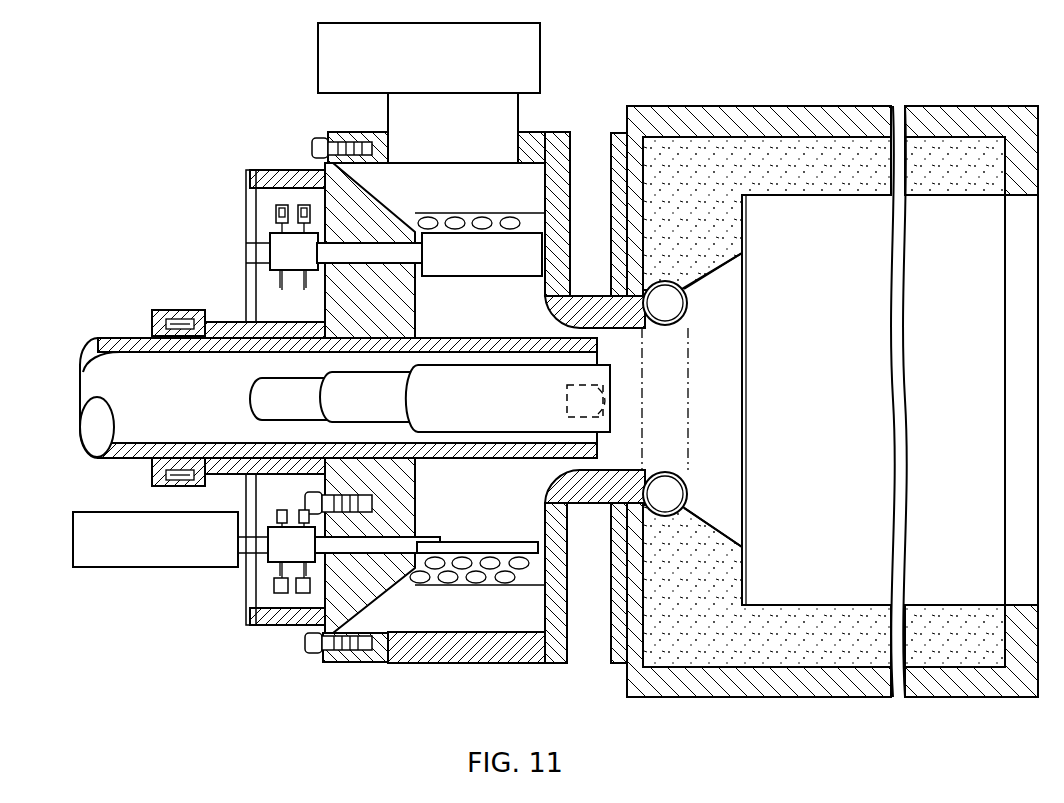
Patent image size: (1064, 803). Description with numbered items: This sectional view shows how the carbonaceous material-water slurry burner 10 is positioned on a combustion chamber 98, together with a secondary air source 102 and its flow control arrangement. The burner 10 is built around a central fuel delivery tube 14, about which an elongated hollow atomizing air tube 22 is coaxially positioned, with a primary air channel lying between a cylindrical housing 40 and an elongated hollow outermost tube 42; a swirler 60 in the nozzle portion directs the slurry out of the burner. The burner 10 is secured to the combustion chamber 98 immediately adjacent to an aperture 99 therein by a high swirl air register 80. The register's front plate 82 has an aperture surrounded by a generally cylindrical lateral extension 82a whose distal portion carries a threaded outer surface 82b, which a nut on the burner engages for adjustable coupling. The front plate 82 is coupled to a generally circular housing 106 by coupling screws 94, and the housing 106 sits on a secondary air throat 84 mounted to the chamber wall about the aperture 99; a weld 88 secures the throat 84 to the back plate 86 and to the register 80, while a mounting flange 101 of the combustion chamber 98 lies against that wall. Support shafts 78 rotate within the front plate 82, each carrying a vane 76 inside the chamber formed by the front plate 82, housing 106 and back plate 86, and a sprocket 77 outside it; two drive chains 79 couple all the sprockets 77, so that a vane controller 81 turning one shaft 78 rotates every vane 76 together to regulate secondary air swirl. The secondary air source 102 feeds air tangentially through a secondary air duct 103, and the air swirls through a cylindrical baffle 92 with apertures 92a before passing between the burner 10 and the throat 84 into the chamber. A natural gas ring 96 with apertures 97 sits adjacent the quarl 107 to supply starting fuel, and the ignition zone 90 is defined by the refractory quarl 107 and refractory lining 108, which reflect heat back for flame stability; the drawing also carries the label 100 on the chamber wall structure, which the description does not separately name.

The carbonaceous material-water slurry burner 10 is at (112, 339).
The fuel delivery tube 14 is at (294, 414).
The atomizing air tube 22 is at (366, 414).
The cylindrical housing 40 is at (464, 414).
The outermost tube 42 is at (83, 370).
The swirler 60 is at (566, 402).
The vane 76 is at (493, 266).
The sprocket 77 is at (306, 266).
The support shaft 78 is at (405, 254).
The drive chains 79 is at (275, 208).
The high swirl air register 80 is at (298, 642).
The vane controller 81 is at (205, 538).
The front plate 82 is at (368, 590).
The lateral extension 82a is at (238, 478).
The threaded outer surface 82b is at (190, 311).
The secondary air throat 84 is at (591, 497).
The back plate 86 is at (562, 587).
The weld 88 is at (595, 298).
The ignition zone 90 is at (831, 398).
The cylindrical baffle 92 is at (440, 217).
The apertures 92a is at (510, 217).
The coupling screws 94 is at (305, 656).
The natural gas ring 96 is at (679, 396).
The apertures 97 is at (690, 341).
The combustion chamber 98 is at (612, 117).
The aperture 99 is at (636, 476).
The oven 100 is at (768, 106).
The mounting flange 101 is at (612, 204).
The secondary air source 102 is at (429, 58).
The secondary air duct 103 is at (453, 128).
The housing 106 is at (352, 135).
The quarl 107 is at (688, 292).
The refractory lining 108 is at (716, 618).